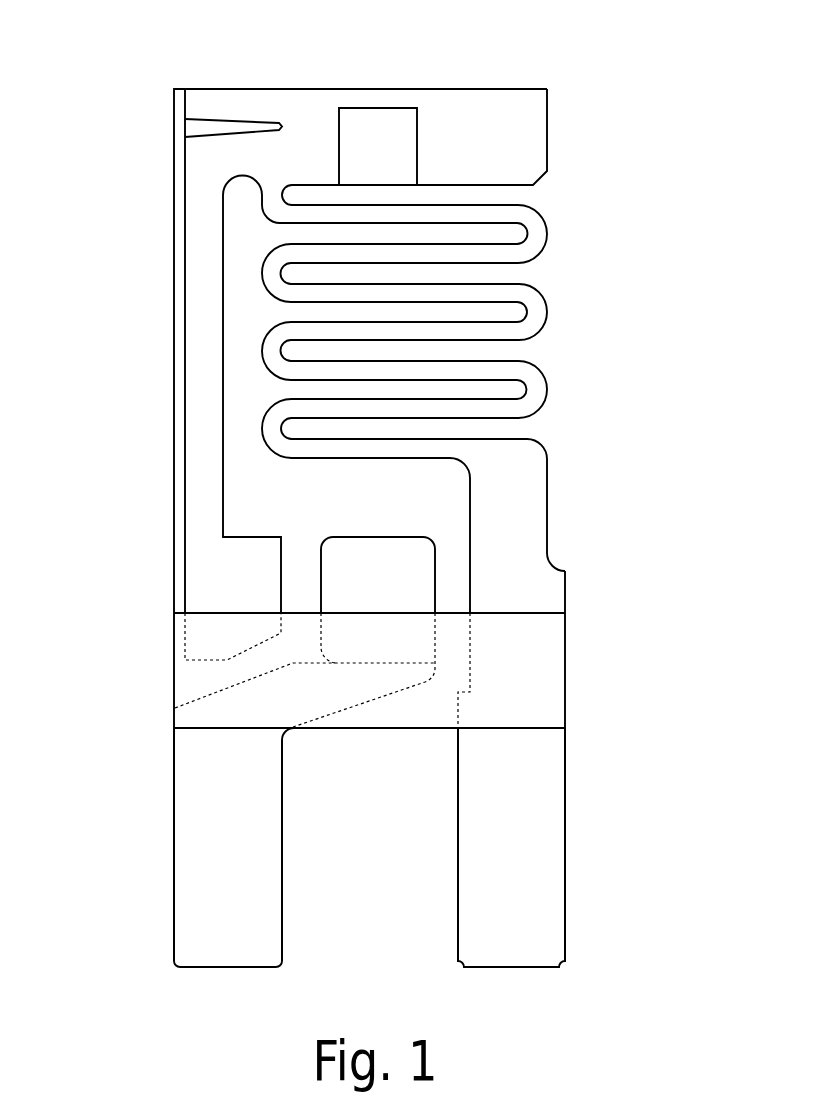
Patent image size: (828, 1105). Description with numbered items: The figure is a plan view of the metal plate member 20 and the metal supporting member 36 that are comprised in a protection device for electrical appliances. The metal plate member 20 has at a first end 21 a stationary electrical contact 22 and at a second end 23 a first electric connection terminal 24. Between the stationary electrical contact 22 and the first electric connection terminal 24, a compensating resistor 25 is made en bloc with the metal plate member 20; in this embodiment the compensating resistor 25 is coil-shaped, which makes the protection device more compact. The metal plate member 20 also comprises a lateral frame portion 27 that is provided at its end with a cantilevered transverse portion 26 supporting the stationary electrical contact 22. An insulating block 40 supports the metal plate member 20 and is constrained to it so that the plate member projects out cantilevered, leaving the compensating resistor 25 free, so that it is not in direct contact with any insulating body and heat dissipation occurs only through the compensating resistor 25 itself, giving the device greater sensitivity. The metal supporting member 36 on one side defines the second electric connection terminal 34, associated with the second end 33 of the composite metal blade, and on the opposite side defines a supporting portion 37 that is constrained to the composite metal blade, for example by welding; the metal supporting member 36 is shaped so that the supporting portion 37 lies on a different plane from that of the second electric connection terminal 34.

The metal plate member 20 is at (548, 552).
The first end 21 is at (287, 100).
The stationary electrical contact 22 is at (400, 127).
The second end 23 is at (533, 887).
The first electric connection terminal 24 is at (515, 967).
The compensating resistor 25 is at (547, 317).
The cantilevered transverse portion 26 is at (537, 111).
The lateral frame portion 27 is at (177, 425).
The second end 33 is at (250, 910).
The second electric connection terminal 34 is at (227, 967).
The metal supporting member 36 is at (173, 862).
The supporting portion 37 is at (403, 553).
The insulating block 40 is at (173, 672).